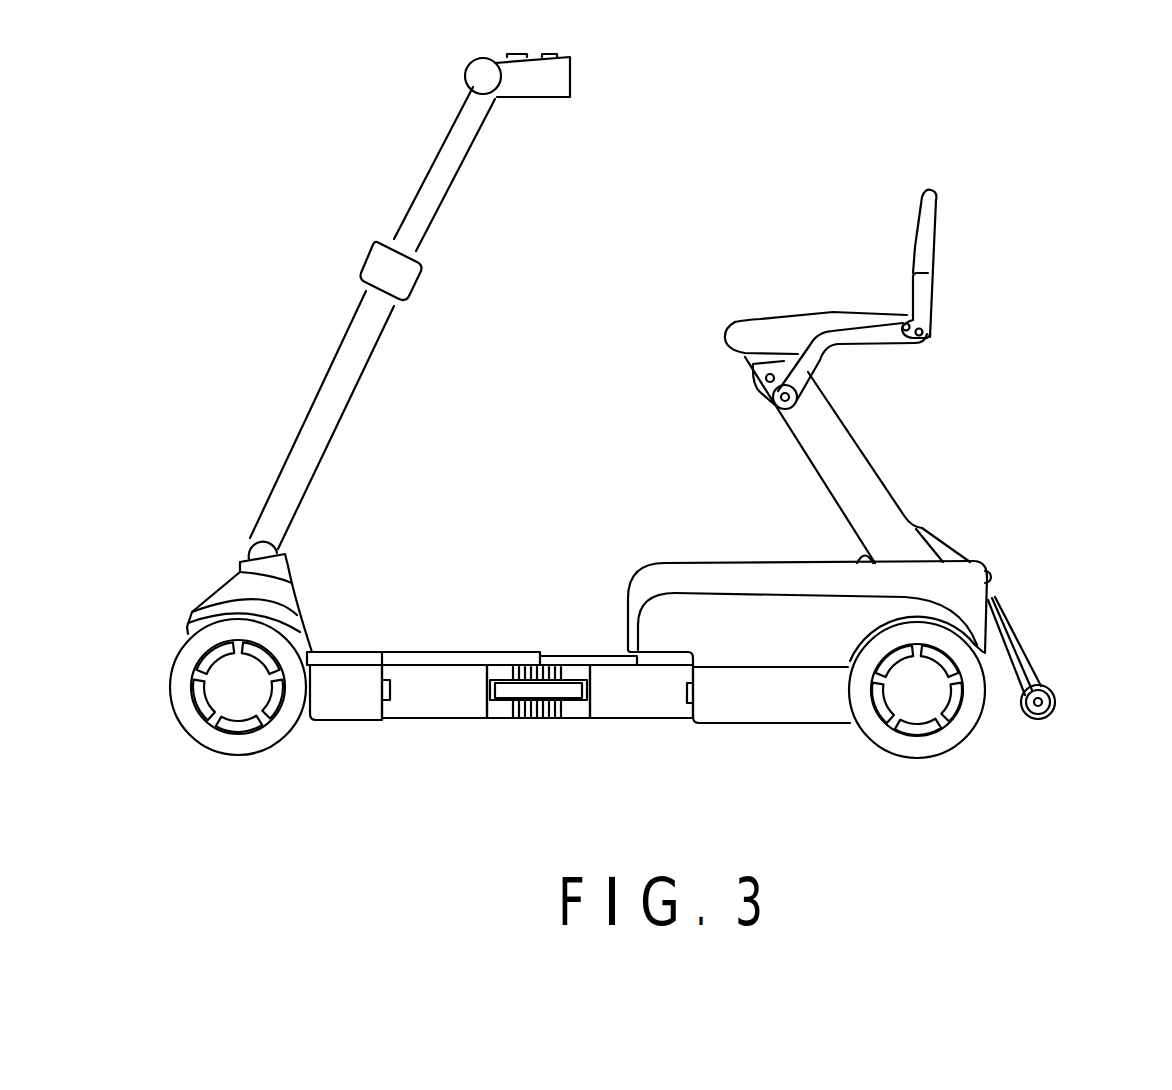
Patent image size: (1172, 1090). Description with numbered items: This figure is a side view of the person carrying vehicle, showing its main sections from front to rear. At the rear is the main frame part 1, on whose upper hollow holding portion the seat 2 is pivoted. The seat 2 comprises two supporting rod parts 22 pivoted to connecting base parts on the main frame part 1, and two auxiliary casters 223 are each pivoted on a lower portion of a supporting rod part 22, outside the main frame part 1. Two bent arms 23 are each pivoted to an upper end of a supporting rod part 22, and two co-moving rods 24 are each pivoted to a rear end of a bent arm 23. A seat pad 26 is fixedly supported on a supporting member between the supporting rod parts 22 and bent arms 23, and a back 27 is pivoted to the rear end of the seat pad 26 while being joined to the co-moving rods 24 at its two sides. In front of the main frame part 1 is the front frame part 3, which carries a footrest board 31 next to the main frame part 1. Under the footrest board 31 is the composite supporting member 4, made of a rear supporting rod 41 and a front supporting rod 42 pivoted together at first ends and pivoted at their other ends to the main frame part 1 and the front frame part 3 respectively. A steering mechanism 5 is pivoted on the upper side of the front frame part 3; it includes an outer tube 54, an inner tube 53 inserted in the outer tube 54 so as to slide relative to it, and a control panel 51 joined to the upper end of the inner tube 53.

The main frame part 1 is at (695, 573).
The seat 2 is at (934, 480).
The supporting rod part 22 is at (862, 507).
The bent arm 23 is at (858, 335).
The co-moving rod 24 is at (922, 297).
The seat pad 26 is at (785, 323).
The back 27 is at (928, 222).
The auxiliary caster 223 is at (1047, 703).
The front frame part 3 is at (340, 722).
The footrest board 31 is at (433, 662).
The composite supporting member 4 is at (538, 730).
The rear supporting rod 41 is at (643, 710).
The front supporting rod 42 is at (438, 712).
The steering mechanism 5 is at (457, 300).
The control panel 51 is at (562, 73).
The inner tube 53 is at (447, 165).
The outer tube 54 is at (360, 358).